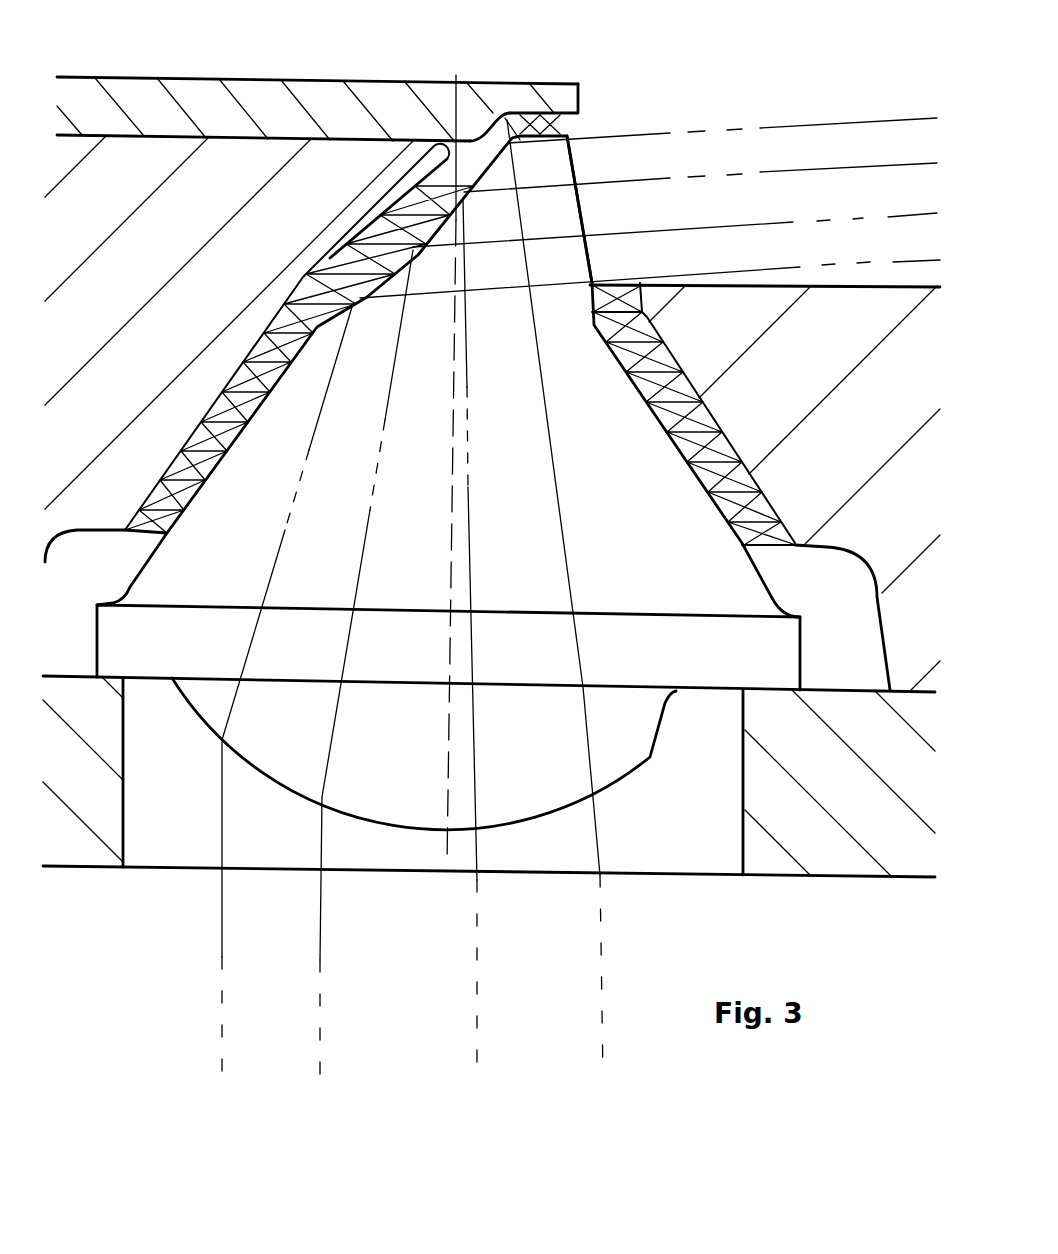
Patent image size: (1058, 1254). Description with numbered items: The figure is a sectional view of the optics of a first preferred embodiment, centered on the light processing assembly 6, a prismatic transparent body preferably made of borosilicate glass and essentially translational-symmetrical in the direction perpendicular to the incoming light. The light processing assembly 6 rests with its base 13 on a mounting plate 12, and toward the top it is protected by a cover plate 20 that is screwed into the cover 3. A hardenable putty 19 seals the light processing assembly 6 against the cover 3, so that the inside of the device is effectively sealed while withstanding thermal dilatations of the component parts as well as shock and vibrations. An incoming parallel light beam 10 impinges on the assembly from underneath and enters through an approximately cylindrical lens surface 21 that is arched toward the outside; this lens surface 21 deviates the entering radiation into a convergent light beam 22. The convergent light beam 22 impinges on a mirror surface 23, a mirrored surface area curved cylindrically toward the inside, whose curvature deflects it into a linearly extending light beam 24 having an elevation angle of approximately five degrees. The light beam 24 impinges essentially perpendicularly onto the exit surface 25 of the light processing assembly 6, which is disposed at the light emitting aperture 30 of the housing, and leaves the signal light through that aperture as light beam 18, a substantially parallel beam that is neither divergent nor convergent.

The cover 3 is at (214, 322).
The light processing assembly 6 is at (606, 466).
The incoming parallel light beam 10 is at (222, 940).
The mounting plate 12 is at (93, 852).
The base 13 is at (147, 690).
The light beam 18 is at (772, 127).
The hardenable putty 19 is at (406, 200).
The cover plate 20 is at (185, 98).
The cylindrical lens surface 21 is at (390, 835).
The convergent light beam 22 is at (275, 563).
The mirror surface 23 is at (474, 148).
The linearly extending light beam 24 is at (541, 130).
The exit surface 25 is at (577, 155).
The light emitting aperture 30 is at (581, 124).